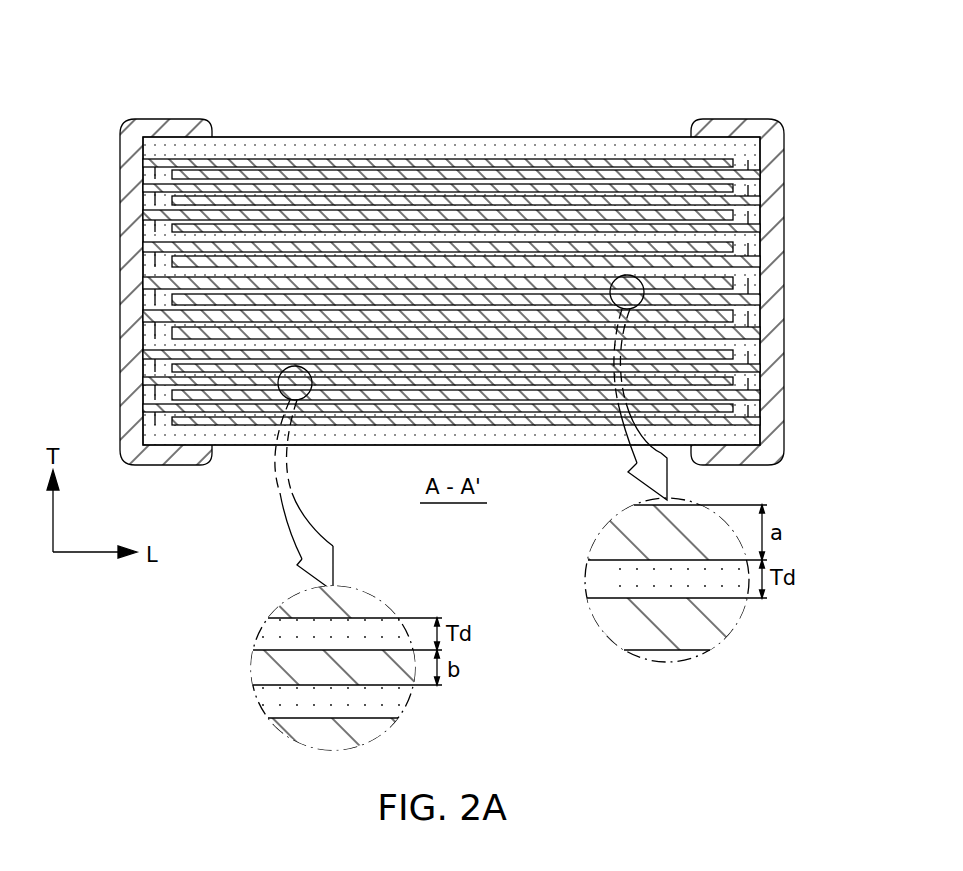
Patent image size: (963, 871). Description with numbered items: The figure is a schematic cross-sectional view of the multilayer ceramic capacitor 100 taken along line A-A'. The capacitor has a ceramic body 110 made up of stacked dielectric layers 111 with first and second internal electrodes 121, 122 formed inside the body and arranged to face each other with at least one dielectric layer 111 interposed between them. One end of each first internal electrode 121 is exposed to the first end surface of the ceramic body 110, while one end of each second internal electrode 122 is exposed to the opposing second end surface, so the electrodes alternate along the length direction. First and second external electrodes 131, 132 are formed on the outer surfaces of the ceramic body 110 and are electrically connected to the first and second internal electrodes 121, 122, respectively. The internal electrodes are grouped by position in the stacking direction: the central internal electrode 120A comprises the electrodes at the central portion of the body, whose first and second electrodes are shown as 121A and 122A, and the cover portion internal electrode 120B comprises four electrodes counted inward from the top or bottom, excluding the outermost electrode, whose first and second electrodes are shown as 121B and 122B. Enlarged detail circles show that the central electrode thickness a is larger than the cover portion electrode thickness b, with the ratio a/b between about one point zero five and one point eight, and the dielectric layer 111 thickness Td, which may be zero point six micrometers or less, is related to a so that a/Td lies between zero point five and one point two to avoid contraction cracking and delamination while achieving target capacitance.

The multilayer ceramic capacitor 100 is at (477, 34).
The ceramic body 110 is at (493, 136).
The dielectric layer 111 is at (750, 248).
The central internal electrode 120A is at (747, 292).
The cover portion internal electrode 120B is at (747, 194).
The first internal electrode 121 is at (150, 244).
The second internal electrode 122 is at (748, 222).
The first internal electrode of the central portion 121A is at (603, 537).
The second internal electrode of the central portion 122A is at (603, 625).
The first internal electrode of the cover portion 121B is at (297, 600).
The second internal electrode of the cover portion 122B is at (265, 670).
The first external electrode 131 is at (161, 124).
The second external electrode 132 is at (742, 124).